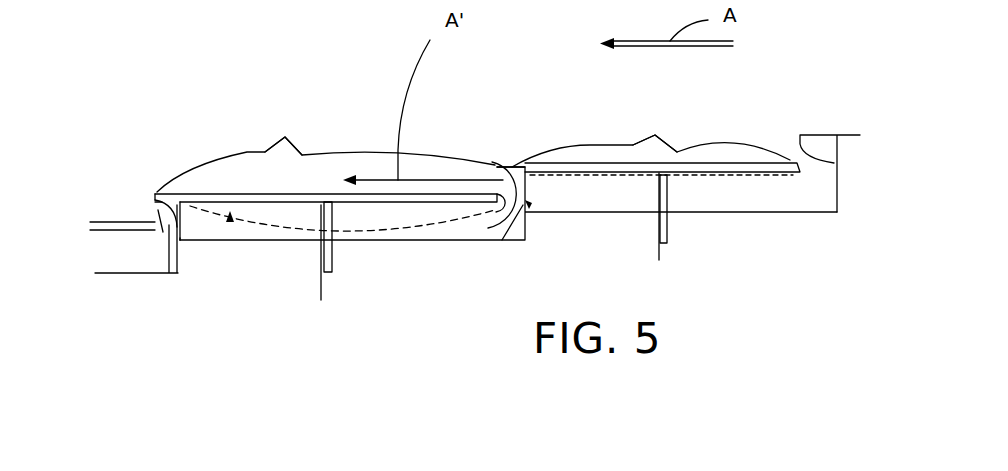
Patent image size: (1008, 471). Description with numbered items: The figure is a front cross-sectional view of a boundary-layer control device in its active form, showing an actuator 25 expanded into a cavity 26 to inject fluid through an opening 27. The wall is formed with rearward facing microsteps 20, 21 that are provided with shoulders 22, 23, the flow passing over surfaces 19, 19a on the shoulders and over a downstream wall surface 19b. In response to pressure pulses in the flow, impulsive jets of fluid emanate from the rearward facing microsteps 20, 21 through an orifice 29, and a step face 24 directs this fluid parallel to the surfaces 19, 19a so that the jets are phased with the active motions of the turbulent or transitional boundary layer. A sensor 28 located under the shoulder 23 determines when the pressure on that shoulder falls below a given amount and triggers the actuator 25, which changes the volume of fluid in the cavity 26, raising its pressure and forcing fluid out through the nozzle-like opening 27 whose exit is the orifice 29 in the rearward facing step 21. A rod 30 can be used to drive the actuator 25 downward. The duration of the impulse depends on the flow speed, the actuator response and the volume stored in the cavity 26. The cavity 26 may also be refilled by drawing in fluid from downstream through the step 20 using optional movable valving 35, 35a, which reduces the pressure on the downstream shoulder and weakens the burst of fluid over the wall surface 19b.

The surface 19 is at (725, 160).
The surface 19a is at (213, 194).
The wall surface 19b is at (105, 222).
The microstep 20 is at (157, 190).
The microstep 21 is at (494, 162).
The shoulder 22 is at (655, 135).
The shoulder 23 is at (285, 137).
The step face 24 is at (155, 193).
The actuator 25 is at (230, 222).
The cavity 26 is at (450, 235).
The opening 27 is at (177, 247).
The sensor 28 is at (338, 253).
The orifice 29 is at (167, 235).
The rod 30 is at (320, 270).
The movable valving 35 is at (200, 238).
The movable valving 35a is at (515, 243).